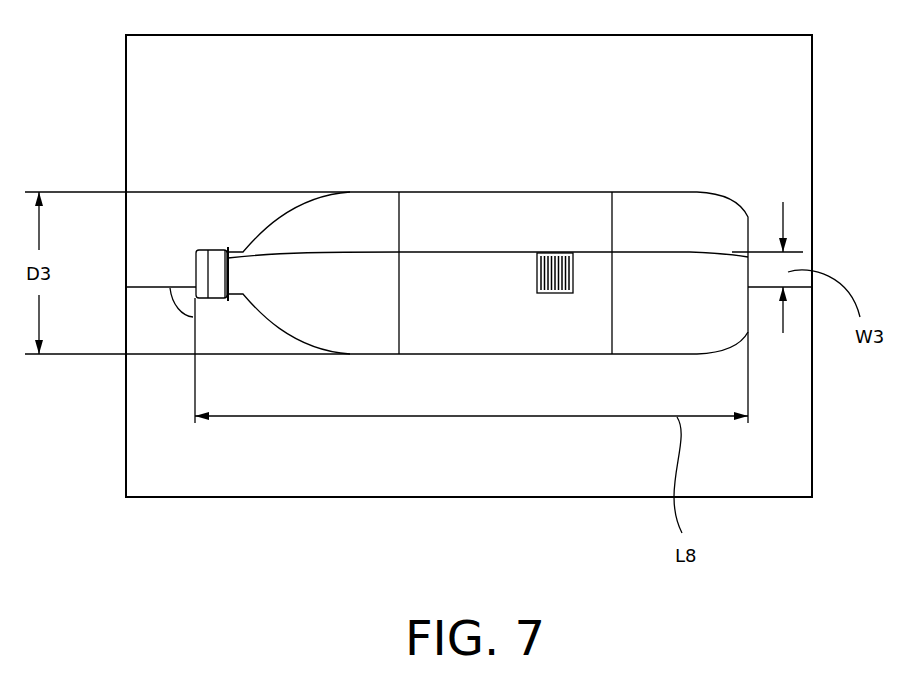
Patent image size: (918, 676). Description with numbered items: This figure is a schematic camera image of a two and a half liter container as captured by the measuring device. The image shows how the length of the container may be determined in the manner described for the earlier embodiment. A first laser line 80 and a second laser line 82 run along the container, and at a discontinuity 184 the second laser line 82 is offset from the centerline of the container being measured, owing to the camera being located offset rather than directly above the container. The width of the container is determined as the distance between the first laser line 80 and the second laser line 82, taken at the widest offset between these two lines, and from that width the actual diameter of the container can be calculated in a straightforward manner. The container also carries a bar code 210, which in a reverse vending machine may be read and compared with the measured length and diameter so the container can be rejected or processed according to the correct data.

The first laser line 80 is at (435, 252).
The second laser line 82 is at (193, 317).
The discontinuity 184 is at (180, 267).
The bar code 210 is at (573, 272).